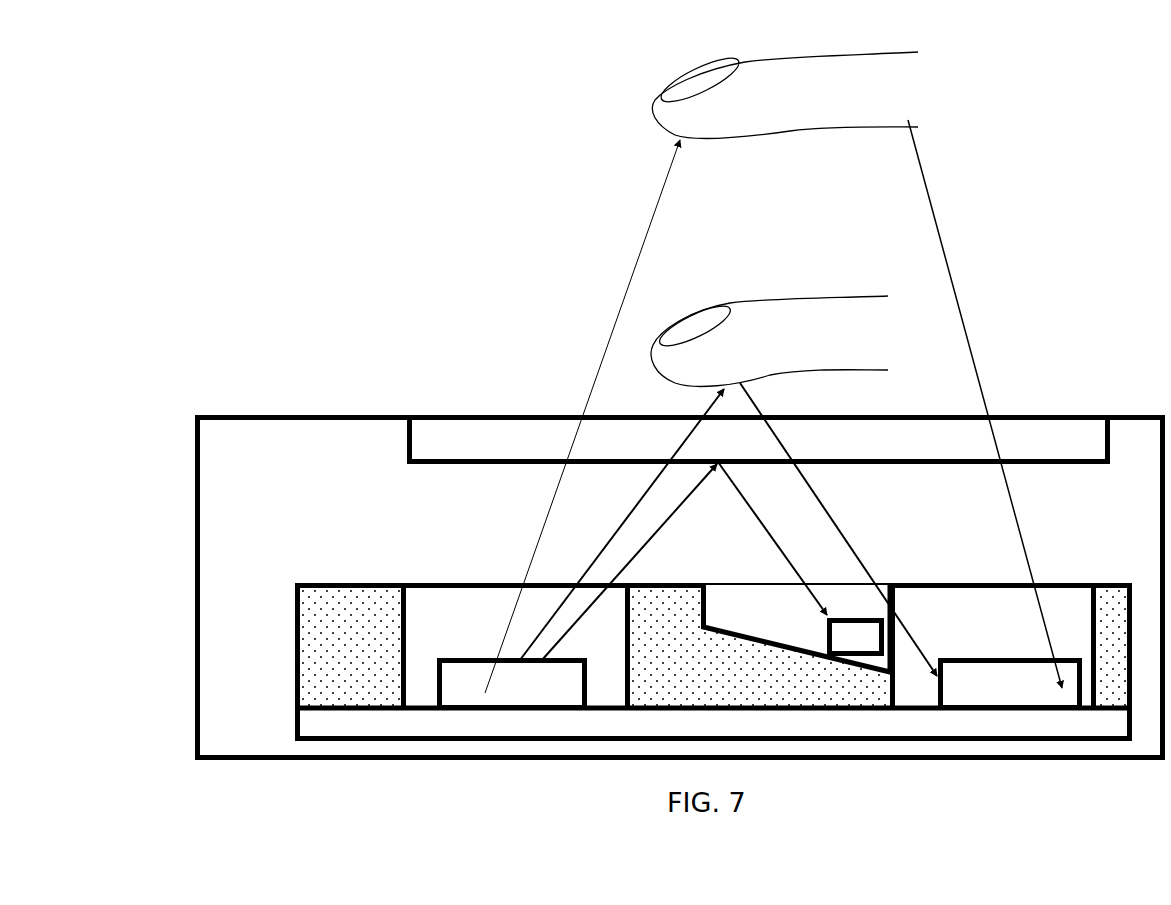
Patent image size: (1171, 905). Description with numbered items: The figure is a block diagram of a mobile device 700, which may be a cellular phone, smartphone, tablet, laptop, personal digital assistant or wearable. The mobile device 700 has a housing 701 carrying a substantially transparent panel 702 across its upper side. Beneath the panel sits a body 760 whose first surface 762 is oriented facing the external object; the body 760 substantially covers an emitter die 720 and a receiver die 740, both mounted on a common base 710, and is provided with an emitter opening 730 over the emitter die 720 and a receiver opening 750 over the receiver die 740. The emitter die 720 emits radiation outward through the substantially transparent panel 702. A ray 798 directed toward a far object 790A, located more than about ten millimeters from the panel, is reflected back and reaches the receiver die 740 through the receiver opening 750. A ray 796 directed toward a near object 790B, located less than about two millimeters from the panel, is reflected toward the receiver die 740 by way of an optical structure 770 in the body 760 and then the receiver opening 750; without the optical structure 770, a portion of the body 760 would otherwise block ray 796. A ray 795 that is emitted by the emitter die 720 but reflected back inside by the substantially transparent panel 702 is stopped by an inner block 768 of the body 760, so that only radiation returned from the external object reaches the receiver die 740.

The mobile device 700 is at (268, 221).
The housing 701 is at (680, 588).
The substantially transparent panel 702 is at (759, 440).
The substrate 710 is at (713, 720).
The emitter die 720 is at (512, 684).
The emitter opening 730 is at (531, 646).
The receiver die 740 is at (1010, 684).
The receiver opening 750 is at (1054, 646).
The body 760 is at (350, 646).
The first surface 762 is at (373, 573).
The inner block 768 is at (856, 637).
The optical structure 770 is at (760, 646).
The far object 790A is at (785, 94).
The near object 790B is at (769, 341).
The ray 795 is at (788, 557).
The ray 796 is at (832, 510).
The ray 798 is at (947, 210).